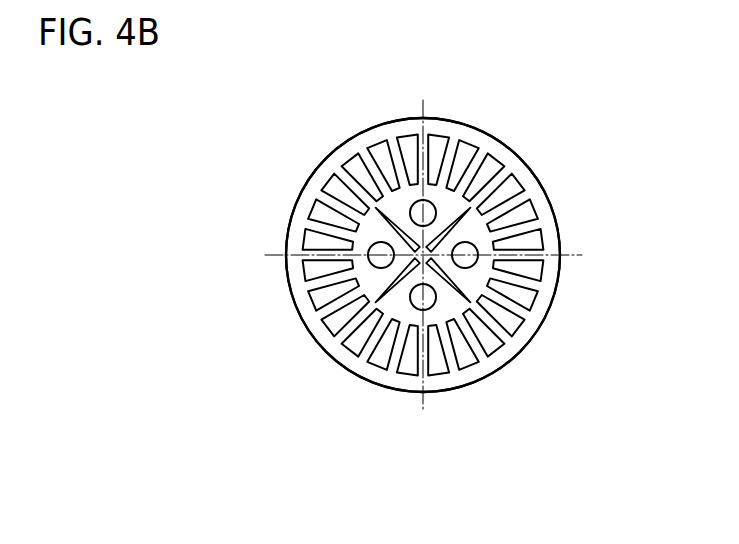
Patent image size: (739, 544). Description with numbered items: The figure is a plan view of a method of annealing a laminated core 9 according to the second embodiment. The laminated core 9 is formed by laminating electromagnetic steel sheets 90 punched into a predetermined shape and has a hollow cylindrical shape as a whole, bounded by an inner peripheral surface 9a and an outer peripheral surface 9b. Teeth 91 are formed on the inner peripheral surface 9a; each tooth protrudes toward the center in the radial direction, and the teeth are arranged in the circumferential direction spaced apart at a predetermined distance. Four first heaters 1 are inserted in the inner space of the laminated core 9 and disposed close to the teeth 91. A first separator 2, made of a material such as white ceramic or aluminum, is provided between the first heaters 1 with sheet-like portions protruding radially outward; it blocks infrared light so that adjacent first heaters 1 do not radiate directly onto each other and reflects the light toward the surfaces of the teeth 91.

The first heater 1 is at (410, 214).
The first separator 2 is at (380, 226).
The laminated core 9 is at (452, 251).
The inner peripheral surface 9a is at (464, 146).
The outer peripheral surface 9b is at (558, 220).
The electromagnetic steel sheet 90 is at (358, 373).
The tooth 91 is at (495, 318).